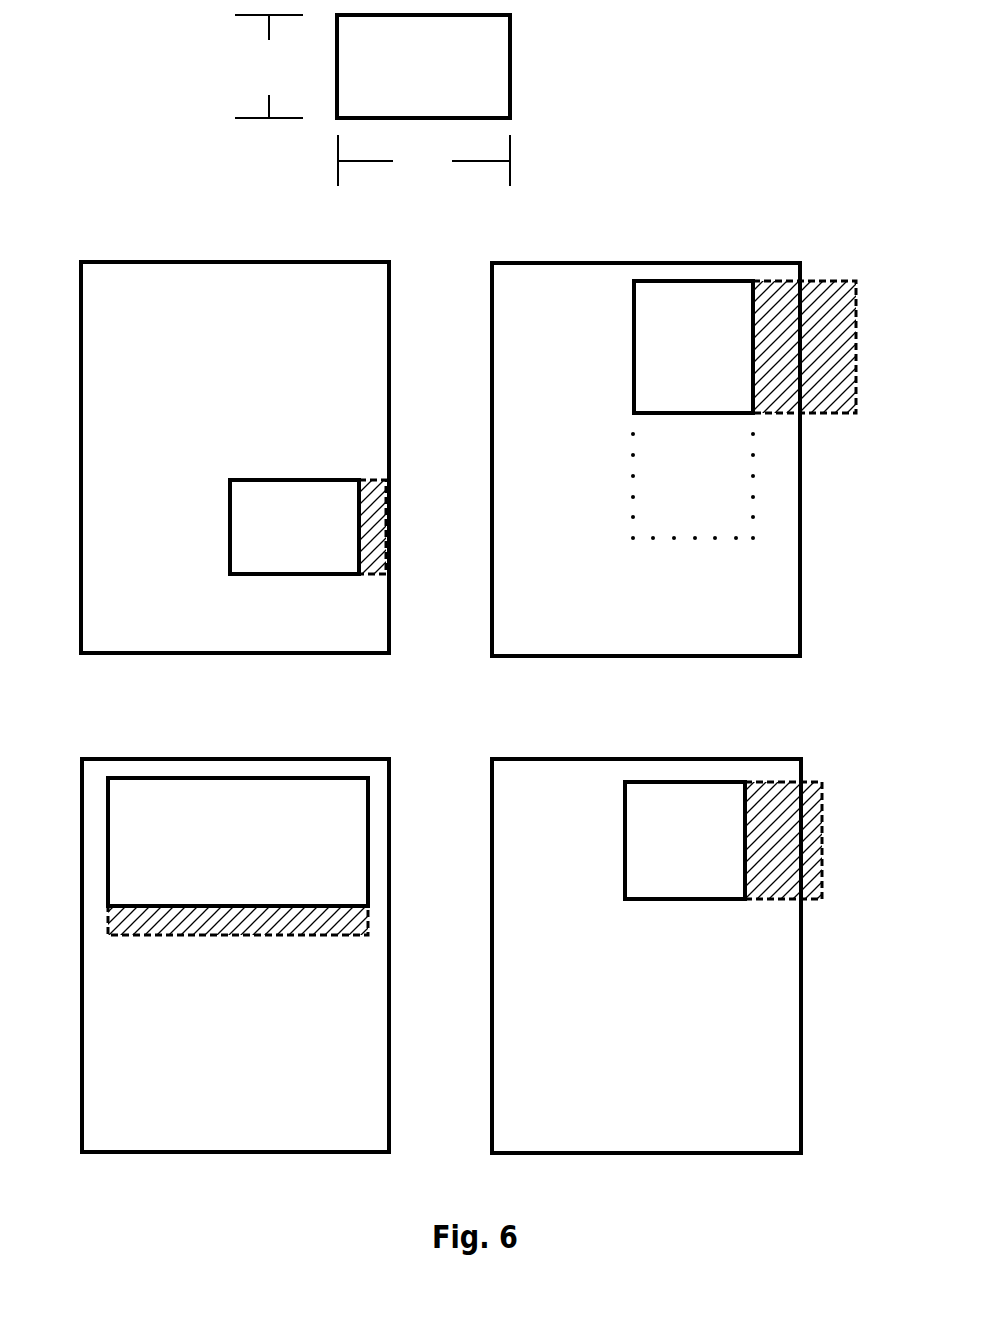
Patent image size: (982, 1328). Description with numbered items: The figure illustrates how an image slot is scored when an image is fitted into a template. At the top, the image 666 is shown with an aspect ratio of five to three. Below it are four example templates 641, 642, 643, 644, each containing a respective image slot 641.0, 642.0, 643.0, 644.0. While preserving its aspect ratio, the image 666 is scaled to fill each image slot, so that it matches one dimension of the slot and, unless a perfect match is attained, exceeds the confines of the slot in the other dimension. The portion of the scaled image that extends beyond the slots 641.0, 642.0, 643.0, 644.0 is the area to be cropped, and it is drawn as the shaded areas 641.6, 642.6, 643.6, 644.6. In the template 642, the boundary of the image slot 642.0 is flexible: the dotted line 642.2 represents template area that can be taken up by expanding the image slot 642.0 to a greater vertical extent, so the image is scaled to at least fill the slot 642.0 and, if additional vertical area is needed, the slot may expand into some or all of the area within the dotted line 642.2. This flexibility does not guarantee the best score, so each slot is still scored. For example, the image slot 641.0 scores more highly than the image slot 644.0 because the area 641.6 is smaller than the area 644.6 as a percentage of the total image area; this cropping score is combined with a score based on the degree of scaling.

The image 666 is at (510, 75).
The template 641 is at (285, 262).
The image slot 641.0 is at (257, 480).
The shaded area 641.6 is at (370, 480).
The template 642 is at (697, 263).
The image slot 642.0 is at (634, 313).
The shaded area 642.6 is at (778, 281).
The dotted line 642.2 is at (630, 495).
The template 643 is at (283, 759).
The image slot 643.0 is at (118, 778).
The shaded area 643.6 is at (365, 920).
The template 644 is at (530, 759).
The image slot 644.0 is at (640, 782).
The shaded area 644.6 is at (768, 782).